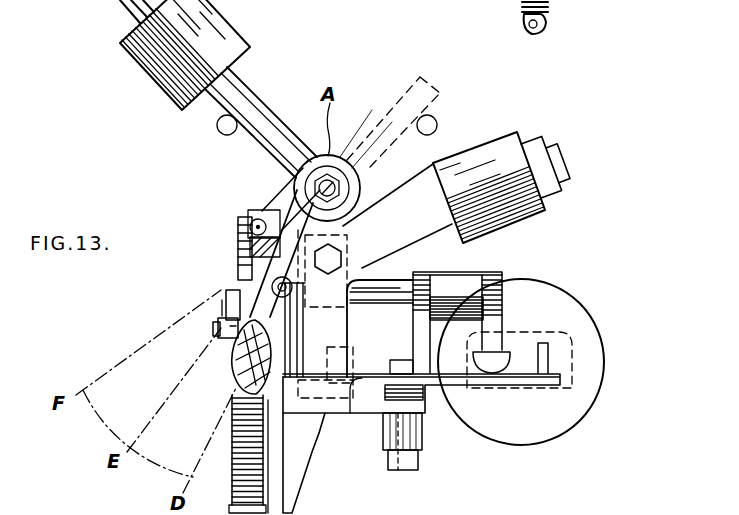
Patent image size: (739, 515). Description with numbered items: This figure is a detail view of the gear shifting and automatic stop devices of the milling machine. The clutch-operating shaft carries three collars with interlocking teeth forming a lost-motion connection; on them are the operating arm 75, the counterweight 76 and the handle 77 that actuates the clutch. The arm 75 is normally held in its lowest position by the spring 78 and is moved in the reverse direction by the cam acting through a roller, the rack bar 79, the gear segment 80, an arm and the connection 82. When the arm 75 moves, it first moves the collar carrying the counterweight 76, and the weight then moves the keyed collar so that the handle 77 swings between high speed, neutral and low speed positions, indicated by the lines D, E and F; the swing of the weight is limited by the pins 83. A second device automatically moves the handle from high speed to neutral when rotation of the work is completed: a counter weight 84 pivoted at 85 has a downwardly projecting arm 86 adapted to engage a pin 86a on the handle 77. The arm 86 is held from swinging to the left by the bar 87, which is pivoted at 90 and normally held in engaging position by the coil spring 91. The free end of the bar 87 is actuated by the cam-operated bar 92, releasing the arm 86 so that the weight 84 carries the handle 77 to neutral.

The operating arm 75 is at (280, 203).
The counterweight 76 is at (227, 62).
The handle 77 is at (280, 232).
The spring 78 is at (262, 475).
The rack bar 79 is at (492, 365).
The gear segment 80 is at (497, 330).
The connection 82 is at (228, 293).
The pins 83 is at (217, 130).
The counter weight 84 is at (530, 213).
The pivot 85 is at (332, 260).
The downwardly projecting arm 86 is at (340, 326).
The pin 86a is at (263, 267).
The bar 87 is at (367, 382).
The pivot 90 is at (398, 470).
The coil spring 91 is at (427, 393).
The bar 92 is at (547, 355).